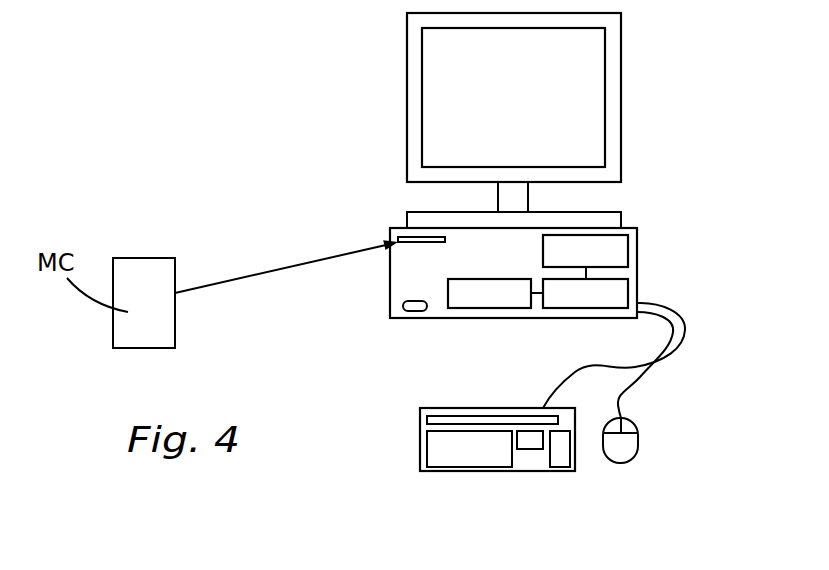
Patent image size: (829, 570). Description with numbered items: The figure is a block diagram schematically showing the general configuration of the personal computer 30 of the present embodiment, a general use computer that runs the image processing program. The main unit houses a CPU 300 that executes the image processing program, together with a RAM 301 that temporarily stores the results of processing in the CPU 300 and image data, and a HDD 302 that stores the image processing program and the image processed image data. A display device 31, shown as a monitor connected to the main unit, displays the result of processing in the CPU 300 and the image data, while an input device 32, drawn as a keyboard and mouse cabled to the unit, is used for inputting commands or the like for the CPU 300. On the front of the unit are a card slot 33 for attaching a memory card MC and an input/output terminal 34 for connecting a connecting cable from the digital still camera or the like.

The personal computer 30 is at (657, 205).
The display device 31 is at (622, 100).
The input device 32 is at (583, 495).
The card slot 33 is at (400, 228).
The input/output terminal 34 is at (414, 322).
The CPU 300 is at (558, 308).
The RAM 301 is at (621, 252).
The HDD 302 is at (497, 308).